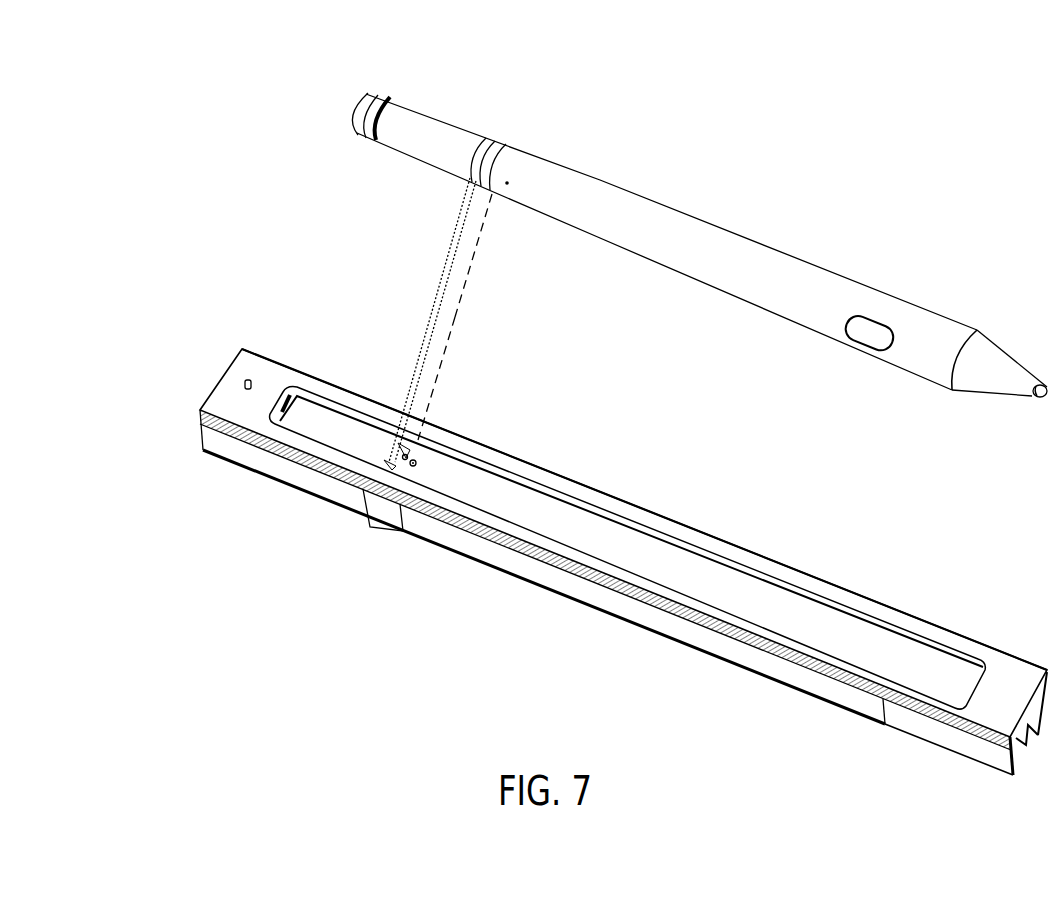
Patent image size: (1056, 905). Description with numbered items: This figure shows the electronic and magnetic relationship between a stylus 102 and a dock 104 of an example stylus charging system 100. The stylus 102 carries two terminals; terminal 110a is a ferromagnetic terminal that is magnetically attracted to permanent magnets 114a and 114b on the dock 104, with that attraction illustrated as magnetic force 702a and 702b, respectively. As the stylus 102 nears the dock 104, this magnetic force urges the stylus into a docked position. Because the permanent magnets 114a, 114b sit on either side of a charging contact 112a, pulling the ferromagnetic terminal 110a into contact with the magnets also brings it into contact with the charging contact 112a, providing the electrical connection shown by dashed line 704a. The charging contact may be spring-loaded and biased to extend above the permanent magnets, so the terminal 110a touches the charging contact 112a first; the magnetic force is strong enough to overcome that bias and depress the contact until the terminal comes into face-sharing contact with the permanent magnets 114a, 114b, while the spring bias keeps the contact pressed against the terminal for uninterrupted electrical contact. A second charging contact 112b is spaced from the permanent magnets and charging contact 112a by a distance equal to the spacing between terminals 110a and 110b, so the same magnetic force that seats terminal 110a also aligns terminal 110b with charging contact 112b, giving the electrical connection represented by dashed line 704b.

The stylus charging system 100 is at (906, 92).
The stylus 102 is at (689, 184).
The dock 104 is at (731, 522).
The terminal 110a is at (488, 138).
The terminal 110b is at (509, 147).
The charging contact 112a is at (412, 455).
The second charging contact 112b is at (419, 463).
The permanent magnet 114a is at (405, 447).
The permanent magnet 114b is at (391, 460).
The magnetic force 702a is at (468, 196).
The magnetic force 702b is at (438, 328).
The dashed line 704a is at (452, 260).
The dashed line 704b is at (474, 242).